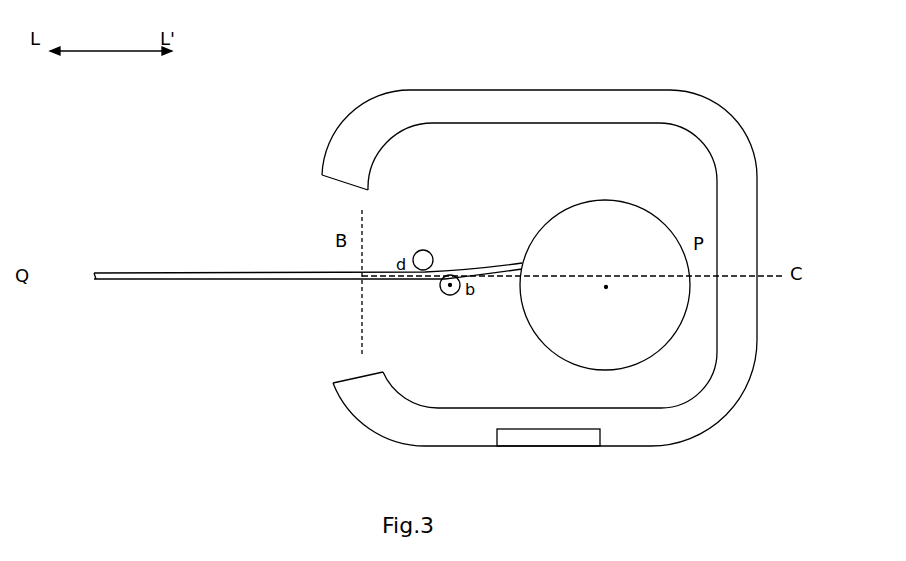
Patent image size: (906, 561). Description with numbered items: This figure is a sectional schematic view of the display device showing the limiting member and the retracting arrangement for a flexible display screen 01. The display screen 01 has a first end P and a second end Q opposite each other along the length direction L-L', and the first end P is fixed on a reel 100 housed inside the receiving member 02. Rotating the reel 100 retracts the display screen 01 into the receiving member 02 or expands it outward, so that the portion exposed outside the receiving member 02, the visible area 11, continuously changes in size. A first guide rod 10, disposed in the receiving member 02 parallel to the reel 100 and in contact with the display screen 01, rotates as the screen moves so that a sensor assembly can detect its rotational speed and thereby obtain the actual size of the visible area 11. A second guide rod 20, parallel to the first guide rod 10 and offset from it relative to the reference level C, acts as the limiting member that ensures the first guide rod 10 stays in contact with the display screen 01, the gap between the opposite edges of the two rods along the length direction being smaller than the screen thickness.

The display screen 01 is at (142, 234).
The receiving member 02 is at (607, 90).
The first guide rod 10 is at (446, 295).
The visible area 11 is at (205, 271).
The second guide rod 20 is at (428, 250).
The reel 100 is at (575, 200).